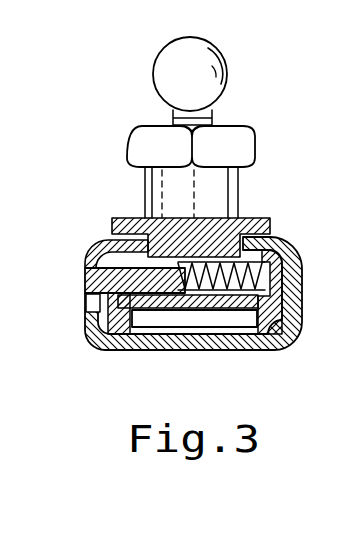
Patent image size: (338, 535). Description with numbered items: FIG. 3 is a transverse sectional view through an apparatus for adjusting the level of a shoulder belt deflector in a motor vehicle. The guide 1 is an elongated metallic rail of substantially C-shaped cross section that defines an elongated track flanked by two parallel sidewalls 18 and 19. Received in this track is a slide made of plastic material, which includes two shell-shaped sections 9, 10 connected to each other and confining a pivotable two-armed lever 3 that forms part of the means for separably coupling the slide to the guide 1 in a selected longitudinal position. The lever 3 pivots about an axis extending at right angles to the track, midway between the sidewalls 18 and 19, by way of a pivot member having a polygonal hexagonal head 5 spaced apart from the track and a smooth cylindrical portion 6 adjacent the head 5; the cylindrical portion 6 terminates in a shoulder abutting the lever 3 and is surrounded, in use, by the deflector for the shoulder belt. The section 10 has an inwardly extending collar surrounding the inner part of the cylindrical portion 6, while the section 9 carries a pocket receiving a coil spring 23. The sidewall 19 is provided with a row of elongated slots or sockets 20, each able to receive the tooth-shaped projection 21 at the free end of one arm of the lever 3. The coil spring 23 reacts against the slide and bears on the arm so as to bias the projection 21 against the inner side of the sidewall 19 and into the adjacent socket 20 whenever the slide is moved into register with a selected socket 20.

The guide 1 is at (253, 341).
The lever 3 is at (94, 254).
The head 5 is at (138, 136).
The smooth cylindrical portion 6 is at (242, 192).
The section 9 is at (118, 343).
The section 10 is at (122, 216).
The sidewall 18 is at (296, 292).
The sidewall 19 is at (84, 328).
The socket 20 is at (86, 309).
The projection 21 is at (83, 277).
The coil spring 23 is at (292, 252).